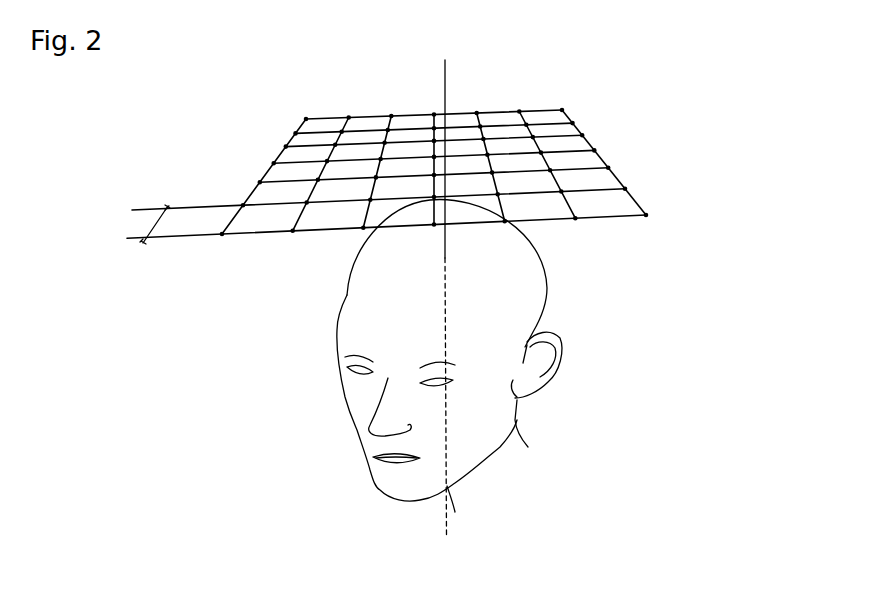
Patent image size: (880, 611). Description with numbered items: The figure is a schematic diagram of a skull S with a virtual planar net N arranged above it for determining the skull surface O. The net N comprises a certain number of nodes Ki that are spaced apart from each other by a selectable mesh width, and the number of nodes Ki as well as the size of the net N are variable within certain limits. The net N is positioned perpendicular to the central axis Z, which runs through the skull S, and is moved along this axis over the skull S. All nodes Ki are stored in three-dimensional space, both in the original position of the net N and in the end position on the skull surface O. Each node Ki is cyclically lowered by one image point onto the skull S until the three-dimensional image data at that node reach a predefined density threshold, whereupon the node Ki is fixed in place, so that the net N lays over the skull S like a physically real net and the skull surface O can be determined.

The virtual planar net N is at (598, 158).
The node Ki is at (222, 235).
The central axis Z is at (445, 81).
The skull S is at (492, 303).
The skull surface O is at (378, 283).